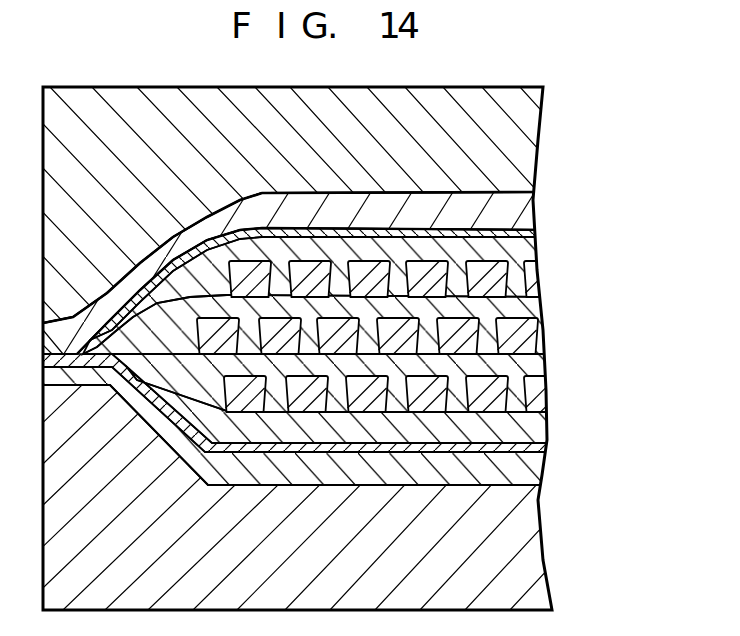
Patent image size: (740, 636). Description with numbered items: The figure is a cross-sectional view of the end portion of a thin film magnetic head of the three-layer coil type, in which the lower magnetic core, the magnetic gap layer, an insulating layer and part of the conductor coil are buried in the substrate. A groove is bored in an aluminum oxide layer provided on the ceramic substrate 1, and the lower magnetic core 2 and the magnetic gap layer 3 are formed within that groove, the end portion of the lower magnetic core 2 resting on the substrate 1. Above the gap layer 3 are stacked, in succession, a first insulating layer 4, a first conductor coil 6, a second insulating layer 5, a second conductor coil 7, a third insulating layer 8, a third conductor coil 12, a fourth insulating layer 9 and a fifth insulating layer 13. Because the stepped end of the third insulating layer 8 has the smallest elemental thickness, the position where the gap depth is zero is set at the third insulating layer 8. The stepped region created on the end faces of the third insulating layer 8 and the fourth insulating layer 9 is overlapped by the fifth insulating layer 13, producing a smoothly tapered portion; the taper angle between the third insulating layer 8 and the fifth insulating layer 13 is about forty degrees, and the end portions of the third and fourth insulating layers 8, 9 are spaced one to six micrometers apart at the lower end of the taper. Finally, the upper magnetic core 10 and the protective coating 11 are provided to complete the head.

The ceramic substrate 1 is at (540, 547).
The lower magnetic core 2 is at (537, 480).
The magnetic gap layer 3 is at (547, 452).
The first insulating layer 4 is at (547, 432).
The second insulating layer 5 is at (543, 400).
The first conductor coil 6 is at (540, 370).
The second conductor coil 7 is at (535, 343).
The third insulating layer 8 is at (540, 312).
The fourth insulating layer 9 is at (538, 253).
The upper magnetic core 10 is at (533, 207).
The protective coating 11 is at (543, 122).
The third conductor coil 12 is at (538, 283).
The fifth insulating layer 13 is at (535, 233).